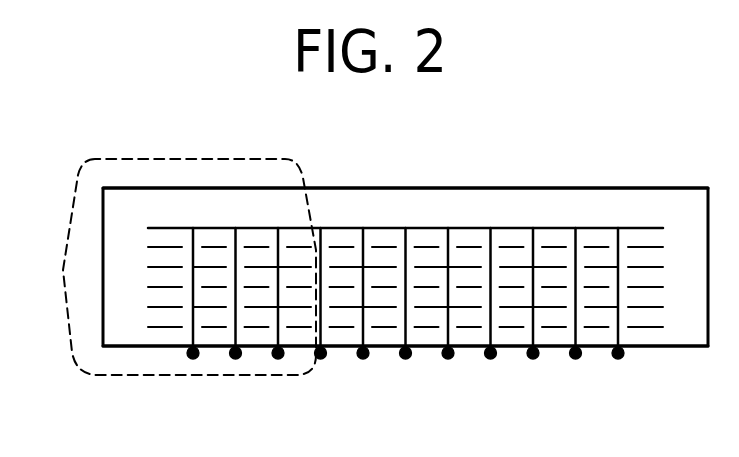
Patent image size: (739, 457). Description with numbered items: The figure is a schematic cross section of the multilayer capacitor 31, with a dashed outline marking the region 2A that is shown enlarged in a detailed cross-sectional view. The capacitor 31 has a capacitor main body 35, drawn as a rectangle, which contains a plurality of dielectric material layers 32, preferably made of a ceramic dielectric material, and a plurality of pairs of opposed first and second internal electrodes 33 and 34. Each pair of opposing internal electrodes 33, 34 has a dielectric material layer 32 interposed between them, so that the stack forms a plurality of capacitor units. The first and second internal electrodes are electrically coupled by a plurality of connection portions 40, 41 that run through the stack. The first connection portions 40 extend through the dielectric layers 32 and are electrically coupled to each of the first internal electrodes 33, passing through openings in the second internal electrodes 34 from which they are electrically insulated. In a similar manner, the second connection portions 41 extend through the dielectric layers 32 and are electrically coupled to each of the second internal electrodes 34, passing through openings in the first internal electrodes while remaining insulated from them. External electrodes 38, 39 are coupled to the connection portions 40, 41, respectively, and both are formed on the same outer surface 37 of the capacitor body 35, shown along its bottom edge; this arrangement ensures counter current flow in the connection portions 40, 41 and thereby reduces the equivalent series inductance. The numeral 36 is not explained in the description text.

The multilayer capacitor 31 is at (51, 227).
The detailed cross-sectional view region 2A is at (136, 159).
The capacitor main body 35 is at (614, 181).
The main surface of substrate 36 is at (525, 188).
The second connection portions 41 is at (192, 238).
The first connection portions 40 is at (233, 317).
The second internal electrodes 34 is at (262, 267).
The first internal electrodes 33 is at (302, 288).
The dielectric material layers 32 is at (433, 267).
The external electrode 38 is at (492, 359).
The outer surface 37 is at (509, 350).
The external electrode 39 is at (619, 359).